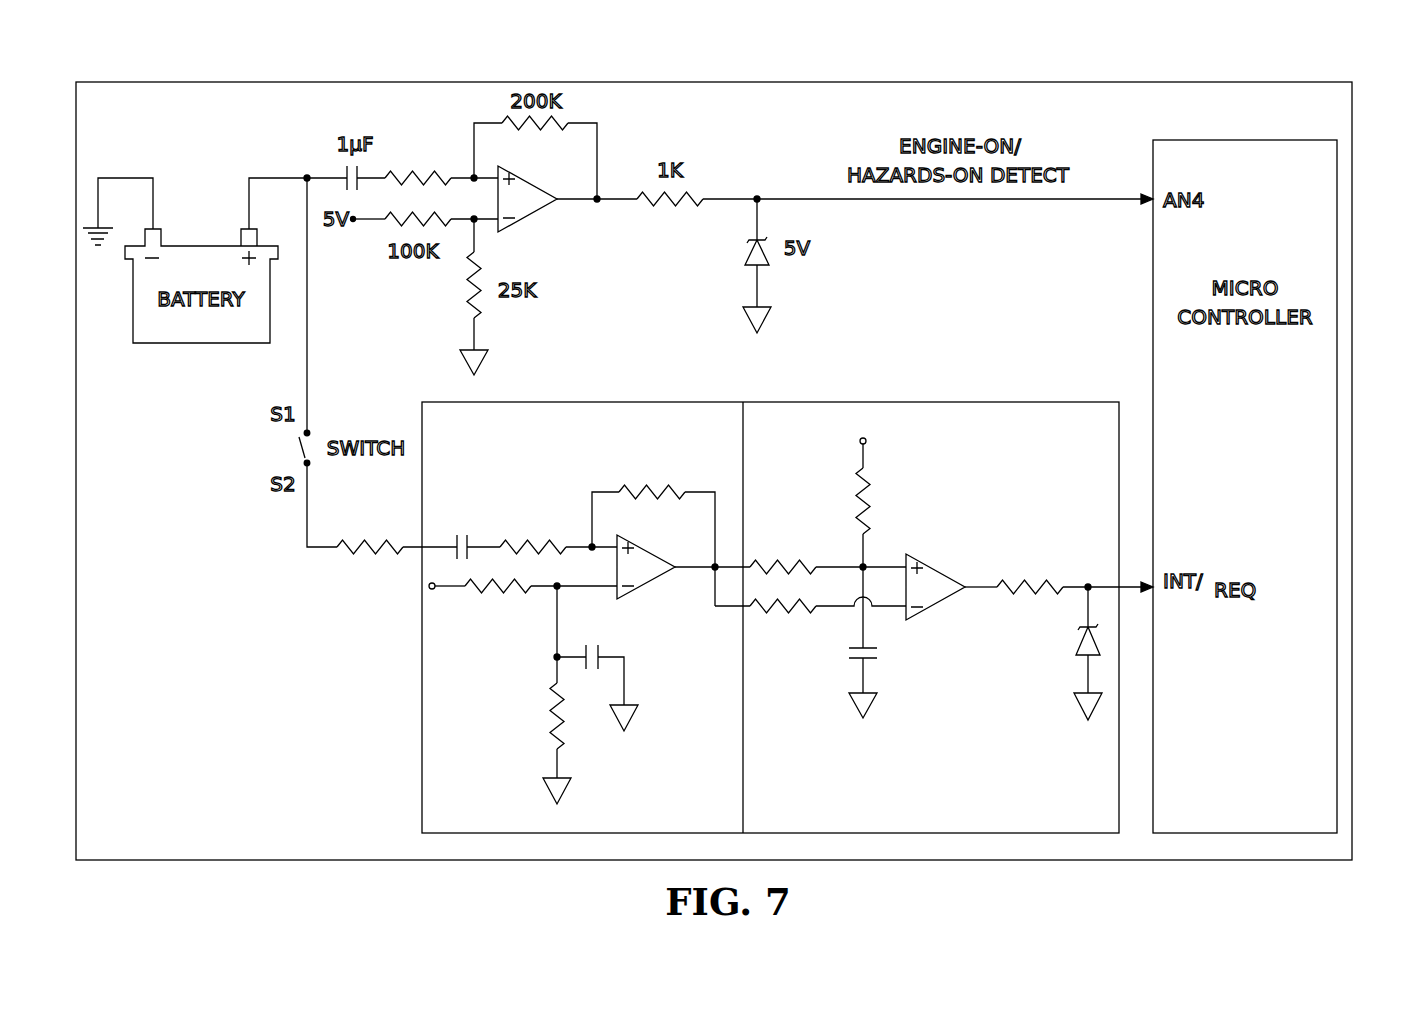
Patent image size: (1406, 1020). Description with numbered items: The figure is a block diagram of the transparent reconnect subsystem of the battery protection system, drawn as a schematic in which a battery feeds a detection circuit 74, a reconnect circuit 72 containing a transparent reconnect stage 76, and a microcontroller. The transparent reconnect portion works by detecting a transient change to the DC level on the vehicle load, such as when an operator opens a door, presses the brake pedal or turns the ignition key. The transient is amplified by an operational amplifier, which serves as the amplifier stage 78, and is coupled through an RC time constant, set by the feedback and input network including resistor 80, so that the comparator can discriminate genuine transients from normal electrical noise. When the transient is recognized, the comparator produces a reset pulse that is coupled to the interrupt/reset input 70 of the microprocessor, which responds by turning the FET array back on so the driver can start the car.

The interrupt/reset input 70 is at (1338, 81).
The switch detection circuit 72 is at (770, 400).
The debounce circuit 74 is at (582, 414).
The transparent reconnect circuit 76 is at (951, 414).
The comparator 78 is at (574, 350).
The hysteresis resistor 80 is at (626, 518).